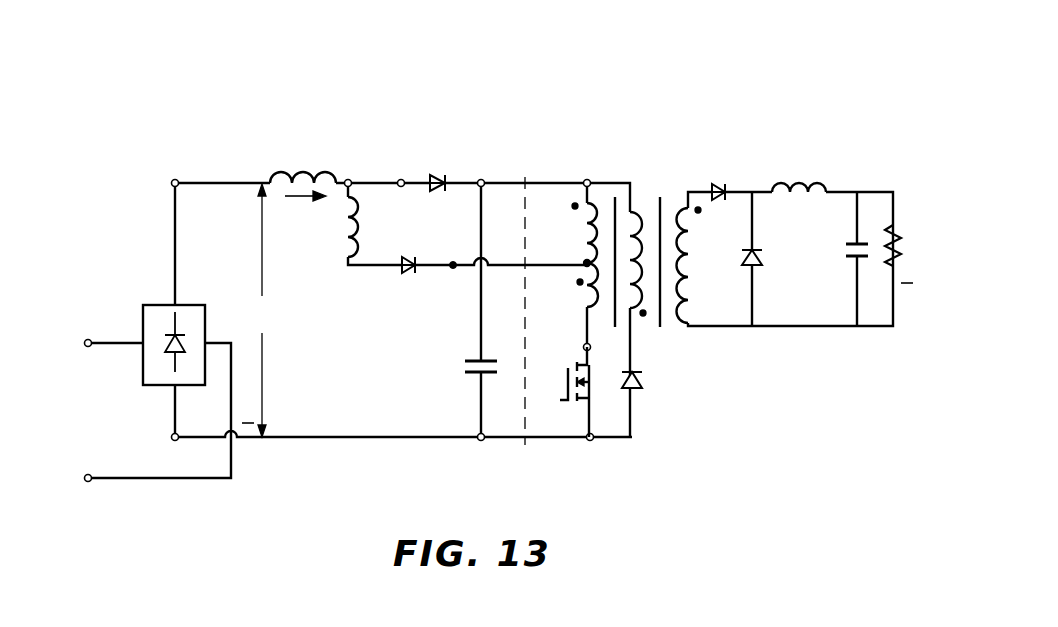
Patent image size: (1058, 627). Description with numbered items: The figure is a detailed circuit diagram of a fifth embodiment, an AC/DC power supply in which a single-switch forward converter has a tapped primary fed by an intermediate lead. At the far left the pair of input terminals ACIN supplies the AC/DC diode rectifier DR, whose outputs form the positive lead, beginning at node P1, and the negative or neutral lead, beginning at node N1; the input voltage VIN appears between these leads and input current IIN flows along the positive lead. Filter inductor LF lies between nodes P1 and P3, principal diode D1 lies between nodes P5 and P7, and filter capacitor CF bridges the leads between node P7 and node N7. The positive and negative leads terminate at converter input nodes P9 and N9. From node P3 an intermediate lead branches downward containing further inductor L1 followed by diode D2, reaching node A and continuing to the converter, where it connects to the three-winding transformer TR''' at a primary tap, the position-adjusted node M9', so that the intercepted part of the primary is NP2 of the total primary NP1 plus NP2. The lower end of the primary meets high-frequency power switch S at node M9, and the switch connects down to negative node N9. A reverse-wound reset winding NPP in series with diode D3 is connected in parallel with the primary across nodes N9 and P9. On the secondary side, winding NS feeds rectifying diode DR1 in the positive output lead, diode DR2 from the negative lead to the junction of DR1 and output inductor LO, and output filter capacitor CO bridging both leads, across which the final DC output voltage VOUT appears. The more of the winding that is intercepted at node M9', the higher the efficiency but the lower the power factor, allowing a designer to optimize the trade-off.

The positive lead node P1 is at (175, 183).
The positive lead node P3 is at (348, 183).
The positive lead node P5 is at (401, 183).
The positive lead node P7 is at (481, 183).
The converter positive input node P9 is at (587, 183).
The negative lead node N1 is at (175, 441).
The negative lead node N7 is at (481, 441).
The converter negative input node N9 is at (590, 441).
The intermediate lead node A is at (453, 268).
The AC/DC diode rectifier DR is at (172, 330).
The AC input terminals ACIN is at (143, 411).
The input voltage VIN is at (265, 310).
The input current IIN is at (305, 213).
The filter inductor LF is at (303, 160).
The further inductor L1 is at (372, 227).
The principal diode D1 is at (448, 166).
The intermediate lead diode D2 is at (408, 278).
The reset winding series diode D3 is at (642, 384).
The filter capacitor CF is at (465, 375).
The three-winding transformer TR''' is at (653, 241).
The first primary winding section NP1 is at (567, 235).
The second primary winding section NP2 is at (568, 307).
The reset winding NPP is at (645, 316).
The secondary winding NS is at (700, 265).
The intermediate node M9 is at (652, 371).
The primary tap node M9' is at (554, 288).
The high-frequency power switch S is at (567, 392).
The rectifying diode DR1 is at (731, 178).
The freewheeling diode DR2 is at (763, 258).
The output inductor LO is at (799, 170).
The output filter capacitor CO is at (856, 258).
The DC output voltage VOUT is at (922, 244).